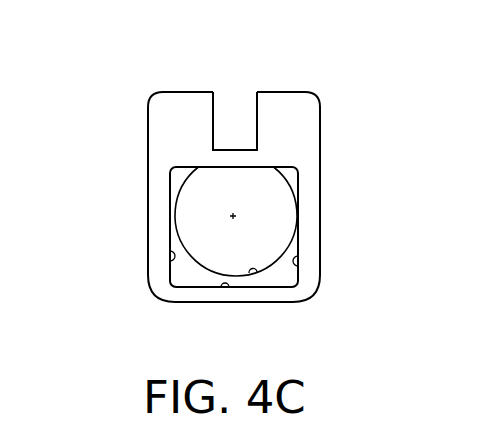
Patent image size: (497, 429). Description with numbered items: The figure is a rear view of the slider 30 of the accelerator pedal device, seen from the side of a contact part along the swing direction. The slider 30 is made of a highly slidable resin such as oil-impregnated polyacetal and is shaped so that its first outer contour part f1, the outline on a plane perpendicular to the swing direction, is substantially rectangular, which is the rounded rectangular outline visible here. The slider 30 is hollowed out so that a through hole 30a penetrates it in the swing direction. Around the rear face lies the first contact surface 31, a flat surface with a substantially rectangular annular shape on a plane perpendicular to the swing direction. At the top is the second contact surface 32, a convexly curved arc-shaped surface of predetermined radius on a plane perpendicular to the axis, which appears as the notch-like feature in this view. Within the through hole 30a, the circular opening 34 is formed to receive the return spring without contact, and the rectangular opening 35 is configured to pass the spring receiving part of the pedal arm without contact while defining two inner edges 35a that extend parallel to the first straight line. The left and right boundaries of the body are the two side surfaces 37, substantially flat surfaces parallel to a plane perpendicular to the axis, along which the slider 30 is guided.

The slider 30 is at (157, 86).
The through hole 30a is at (282, 203).
The first contact surface 31 is at (310, 228).
The second contact surface 32 is at (288, 92).
The circular opening 34 is at (256, 273).
The rectangular opening 35 is at (230, 285).
The inner edges 35a is at (175, 262).
The side surfaces 37 is at (148, 192).
The first outer contour part f1 is at (321, 128).